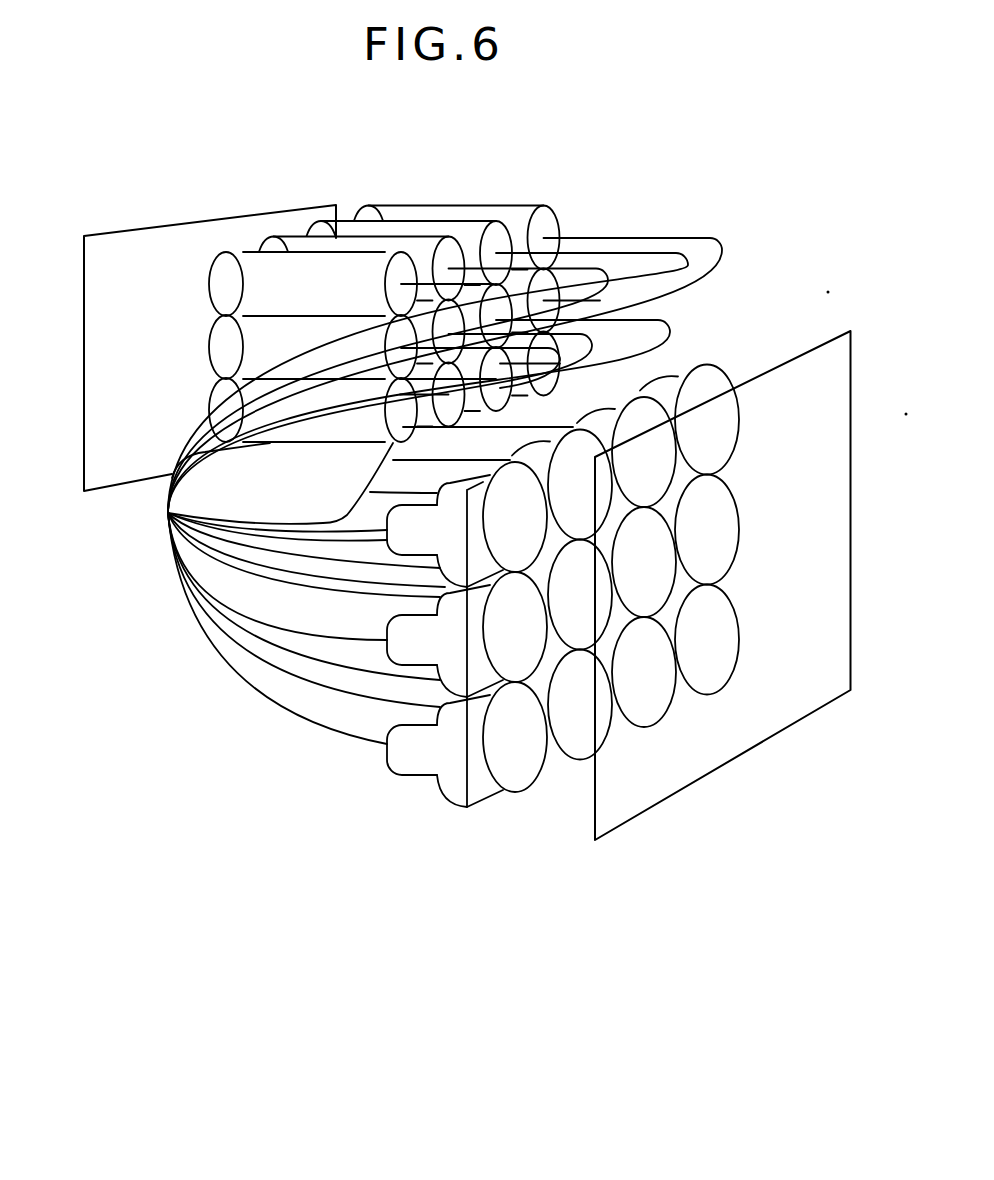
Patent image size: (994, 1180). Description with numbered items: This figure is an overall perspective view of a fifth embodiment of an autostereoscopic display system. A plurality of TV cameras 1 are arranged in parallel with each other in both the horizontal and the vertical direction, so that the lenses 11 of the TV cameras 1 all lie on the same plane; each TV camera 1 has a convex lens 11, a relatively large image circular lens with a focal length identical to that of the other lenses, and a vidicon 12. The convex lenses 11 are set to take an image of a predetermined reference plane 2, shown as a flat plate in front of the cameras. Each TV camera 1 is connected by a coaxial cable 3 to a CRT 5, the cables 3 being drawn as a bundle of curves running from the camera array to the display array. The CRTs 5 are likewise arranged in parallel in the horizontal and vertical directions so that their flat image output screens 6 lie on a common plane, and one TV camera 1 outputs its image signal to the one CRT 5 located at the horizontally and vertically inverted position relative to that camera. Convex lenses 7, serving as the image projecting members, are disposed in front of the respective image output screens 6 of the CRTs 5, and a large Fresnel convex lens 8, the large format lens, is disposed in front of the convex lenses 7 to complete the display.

The TV camera 1 is at (420, 275).
The reference plane 2 is at (150, 247).
The coaxial cable 3 is at (145, 522).
The CRT 5 is at (417, 770).
The image output screen 6 is at (488, 790).
The convex lens 7 is at (530, 787).
The large Fresnel convex lens 8 is at (796, 385).
The convex lens 11 is at (374, 212).
The vidicon 12 is at (545, 207).